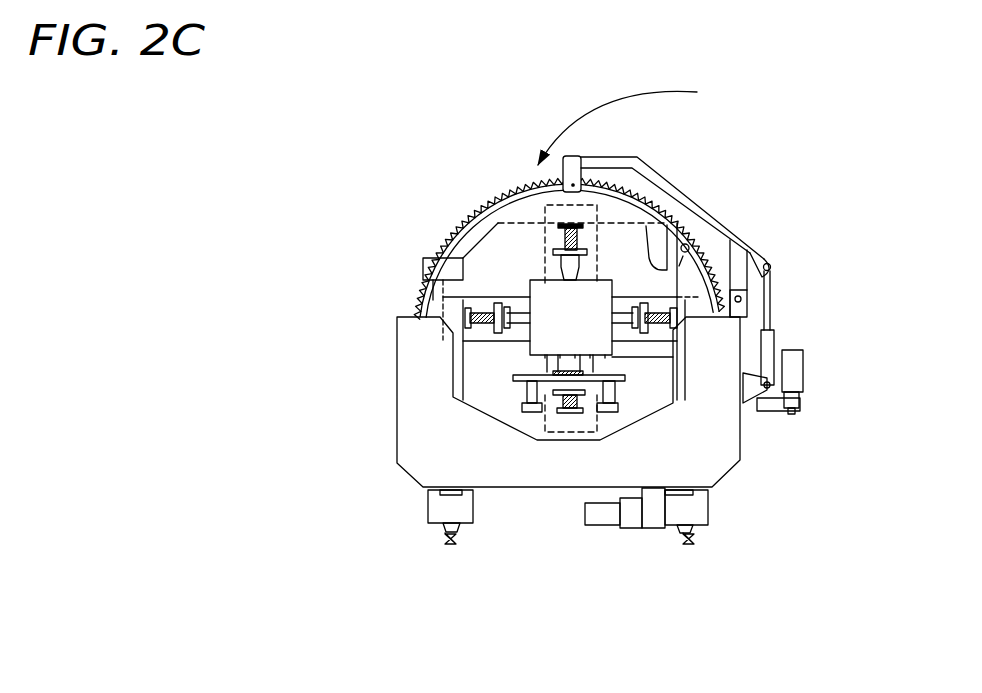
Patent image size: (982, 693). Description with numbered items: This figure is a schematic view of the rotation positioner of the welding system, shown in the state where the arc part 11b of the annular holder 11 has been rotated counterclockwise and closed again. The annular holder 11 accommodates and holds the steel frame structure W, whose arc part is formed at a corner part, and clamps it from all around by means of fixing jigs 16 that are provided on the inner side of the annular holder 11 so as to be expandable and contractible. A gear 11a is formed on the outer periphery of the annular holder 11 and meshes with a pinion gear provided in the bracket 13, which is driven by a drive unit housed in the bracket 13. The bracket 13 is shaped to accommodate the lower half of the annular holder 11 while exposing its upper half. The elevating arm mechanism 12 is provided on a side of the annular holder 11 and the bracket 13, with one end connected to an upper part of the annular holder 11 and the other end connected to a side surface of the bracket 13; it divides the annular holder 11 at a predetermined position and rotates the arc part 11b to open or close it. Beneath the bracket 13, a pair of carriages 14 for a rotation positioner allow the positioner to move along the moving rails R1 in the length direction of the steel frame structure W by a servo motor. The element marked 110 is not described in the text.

The annular holder 11 is at (562, 205).
The gear 11a is at (443, 237).
The arc part 11b is at (537, 207).
The elevating arm mechanism 12 is at (673, 170).
The bracket 13 is at (722, 435).
The carriage for a rotation positioner 14 is at (440, 510).
The fixing jig 16 is at (517, 394).
The rotary table unit 110 is at (588, 242).
The steel frame structure W is at (517, 283).
The moving rail for a positioner R1 is at (450, 547).